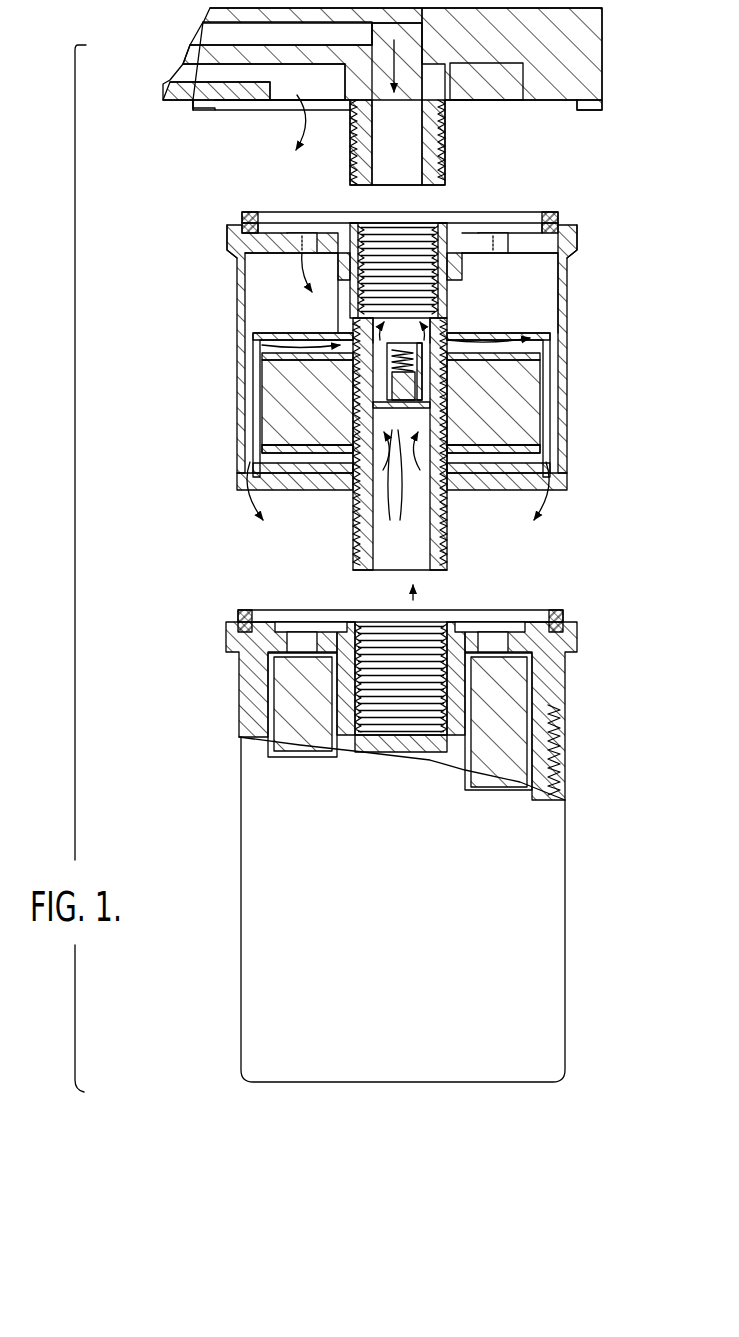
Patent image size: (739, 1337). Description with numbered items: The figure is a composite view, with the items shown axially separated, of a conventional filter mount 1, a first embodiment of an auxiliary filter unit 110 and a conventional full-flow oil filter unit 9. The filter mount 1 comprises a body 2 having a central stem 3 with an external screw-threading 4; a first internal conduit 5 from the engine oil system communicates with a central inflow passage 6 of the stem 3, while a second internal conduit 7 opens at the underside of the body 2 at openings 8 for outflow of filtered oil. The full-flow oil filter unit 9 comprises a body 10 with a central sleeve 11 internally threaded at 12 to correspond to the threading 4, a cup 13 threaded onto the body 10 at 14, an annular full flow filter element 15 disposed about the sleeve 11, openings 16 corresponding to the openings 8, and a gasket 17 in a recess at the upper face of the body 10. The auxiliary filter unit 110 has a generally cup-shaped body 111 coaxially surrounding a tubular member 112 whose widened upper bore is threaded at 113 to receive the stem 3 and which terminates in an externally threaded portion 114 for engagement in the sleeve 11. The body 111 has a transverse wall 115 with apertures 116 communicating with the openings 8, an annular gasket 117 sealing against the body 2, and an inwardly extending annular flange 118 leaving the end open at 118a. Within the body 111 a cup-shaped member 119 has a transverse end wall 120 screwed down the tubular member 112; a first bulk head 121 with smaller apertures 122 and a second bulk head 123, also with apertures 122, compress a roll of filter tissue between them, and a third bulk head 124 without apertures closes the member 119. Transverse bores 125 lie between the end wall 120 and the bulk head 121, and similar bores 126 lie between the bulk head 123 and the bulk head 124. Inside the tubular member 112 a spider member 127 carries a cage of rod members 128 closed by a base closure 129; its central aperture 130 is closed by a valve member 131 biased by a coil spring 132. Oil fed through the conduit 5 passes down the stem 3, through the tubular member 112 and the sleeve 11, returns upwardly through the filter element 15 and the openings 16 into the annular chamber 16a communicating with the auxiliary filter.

The filter mount 1 is at (411, 93).
The body 2 is at (583, 25).
The central stem 3 is at (425, 142).
The external screw-threading 4 is at (452, 176).
The first internal conduit 5 is at (212, 29).
The central inflow passage 6 is at (385, 123).
The second internal conduit 7 is at (207, 77).
The openings 8 is at (292, 88).
The full-flow oil filter unit 9 is at (407, 829).
The body 10 is at (385, 688).
The central sleeve 11 is at (432, 710).
The internal threading 12 is at (430, 632).
The cup 13 is at (540, 836).
The threaded connection 14 is at (562, 766).
The full flow filter element 15 is at (300, 725).
The openings 16 is at (296, 642).
The annular chamber 16a is at (335, 616).
The gasket 17 is at (562, 612).
The auxiliary filter unit 110 is at (416, 374).
The cup-shaped body 111 is at (562, 313).
The tubular member 112 is at (440, 330).
The internally threaded portion 113 is at (430, 225).
The externally threaded portion 114 is at (438, 549).
The transverse wall 115 is at (252, 258).
The apertures 116 is at (297, 245).
The annular gasket 117 is at (560, 222).
The inwardly extending annular flange 118 is at (560, 490).
The open end 118a is at (285, 500).
The cup-shaped member 119 is at (540, 410).
The transverse end wall 120 is at (548, 350).
The first bulk head 121 is at (300, 375).
The apertures 122 is at (300, 353).
The second bulk head 123 is at (530, 450).
The third bulk head 124 is at (513, 497).
The transverse bores 125 is at (468, 335).
The bores 126 is at (358, 488).
The spider member 127 is at (440, 490).
The rod members 128 is at (357, 332).
The base closure 129 is at (420, 345).
The central aperture 130 is at (398, 493).
The valve member 131 is at (400, 370).
The coil spring 132 is at (355, 350).